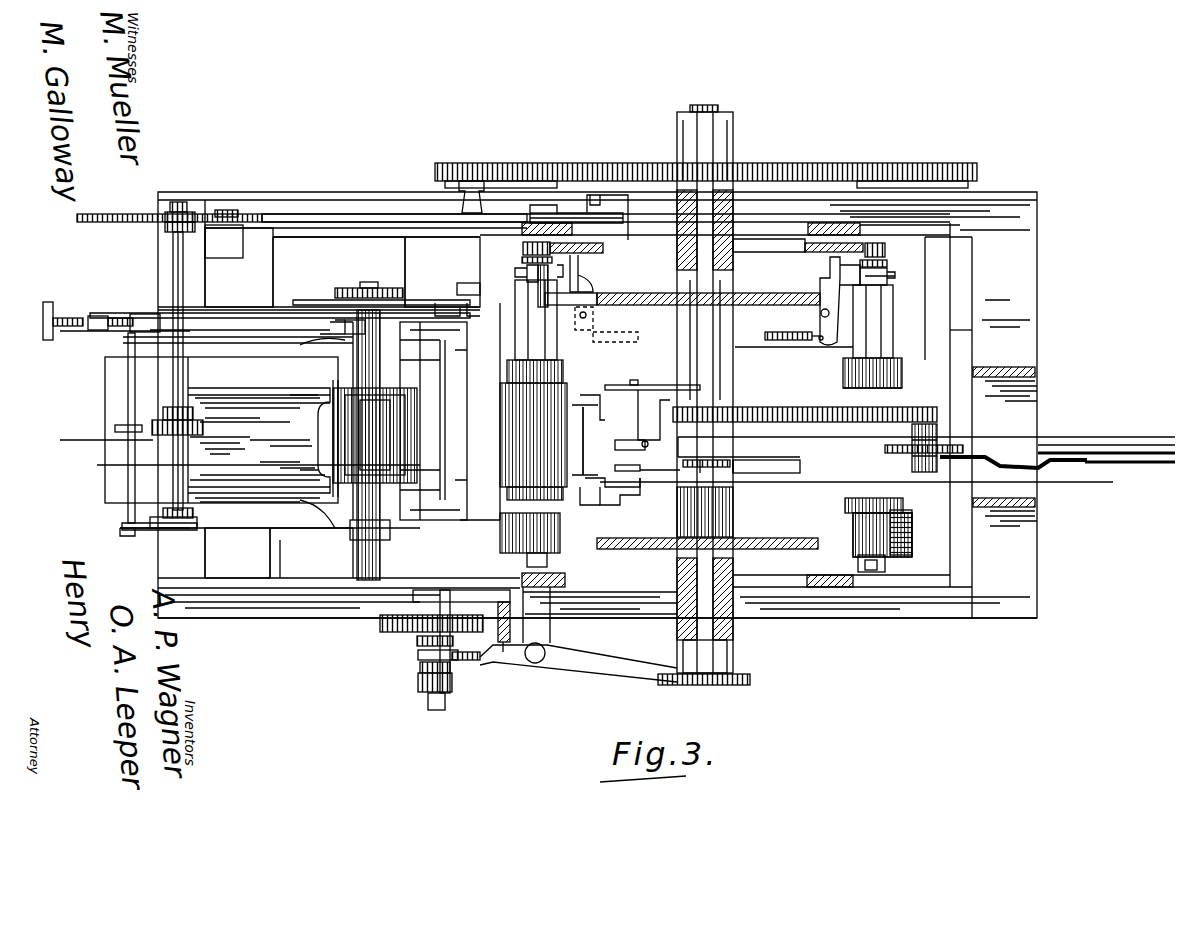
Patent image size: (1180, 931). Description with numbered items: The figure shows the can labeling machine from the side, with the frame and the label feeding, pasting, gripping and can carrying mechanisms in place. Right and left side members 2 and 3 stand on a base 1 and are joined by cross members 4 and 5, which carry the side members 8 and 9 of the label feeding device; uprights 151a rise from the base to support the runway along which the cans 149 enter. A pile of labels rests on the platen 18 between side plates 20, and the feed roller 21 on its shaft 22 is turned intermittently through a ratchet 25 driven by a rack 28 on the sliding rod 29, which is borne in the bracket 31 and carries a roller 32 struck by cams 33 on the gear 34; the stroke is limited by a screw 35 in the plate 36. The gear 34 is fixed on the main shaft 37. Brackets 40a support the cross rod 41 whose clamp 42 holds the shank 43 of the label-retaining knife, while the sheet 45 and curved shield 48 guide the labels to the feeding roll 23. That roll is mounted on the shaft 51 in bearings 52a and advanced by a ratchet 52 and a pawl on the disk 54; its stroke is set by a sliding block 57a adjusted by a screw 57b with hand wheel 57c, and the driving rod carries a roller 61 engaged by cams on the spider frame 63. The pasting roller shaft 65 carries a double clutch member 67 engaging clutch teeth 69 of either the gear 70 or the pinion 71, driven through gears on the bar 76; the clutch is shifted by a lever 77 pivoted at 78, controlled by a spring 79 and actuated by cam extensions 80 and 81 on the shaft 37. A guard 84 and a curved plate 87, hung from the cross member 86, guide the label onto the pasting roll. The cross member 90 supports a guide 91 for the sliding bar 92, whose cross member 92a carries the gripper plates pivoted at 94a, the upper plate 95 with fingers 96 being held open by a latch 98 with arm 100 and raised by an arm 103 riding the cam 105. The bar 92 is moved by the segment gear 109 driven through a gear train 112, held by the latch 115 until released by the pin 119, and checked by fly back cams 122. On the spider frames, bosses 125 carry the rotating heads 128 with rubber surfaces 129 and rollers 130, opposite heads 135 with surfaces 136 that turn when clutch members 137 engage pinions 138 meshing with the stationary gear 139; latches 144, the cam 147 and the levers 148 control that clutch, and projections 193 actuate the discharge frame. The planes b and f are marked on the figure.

The base 1 is at (578, 405).
The right side member 2 is at (160, 588).
The left side member 3 is at (335, 275).
The cross member 4 is at (239, 403).
The cross member 5 is at (442, 272).
The right side member of label feeding device 8 is at (305, 530).
The left side member of label feeding device 9 is at (275, 350).
The horizontal platen 18 is at (260, 431).
The side plates 20 is at (263, 430).
The roller 21 is at (240, 426).
The shaft 22 is at (173, 289).
The feeding roll 23 is at (375, 435).
The ratchet 25 is at (165, 205).
The rack 28 is at (120, 212).
The horizontal sliding rod 29 is at (355, 215).
The bracket 31 is at (220, 240).
The roller 32 is at (490, 185).
The cams 33 is at (525, 185).
The gear 34 is at (600, 170).
The screw 35 is at (618, 200).
The plate 36 is at (575, 205).
The shaft 37 is at (712, 112).
The brackets 40a is at (145, 536).
The cross rod 41 is at (125, 360).
The clamp 42 is at (142, 418).
The shank 43 is at (118, 425).
The sheet 45 is at (330, 528).
The curved shield 48 is at (322, 438).
The shaft 51 is at (345, 322).
The ratchet 52 is at (360, 288).
The bearings 52a is at (367, 545).
The disk 54 is at (350, 290).
The sliding block 57a is at (90, 316).
The screw 57b is at (135, 318).
The hand wheel 57c is at (60, 318).
The roller 61 is at (457, 287).
The rotating spider frame 63 is at (635, 297).
The shaft 65 is at (430, 560).
The double clutch member 67 is at (418, 655).
The clutch teeth 69 is at (417, 640).
The gear 70 is at (380, 626).
The pinion 71 is at (420, 685).
The bar 76 is at (420, 598).
The lever 77 is at (605, 668).
The pivot 78 is at (537, 663).
The spring 79 is at (485, 665).
The cam extension 80 is at (680, 685).
The cam extension 81 is at (710, 685).
The guard 84 is at (410, 435).
The cross member 86 is at (452, 366).
The curved plate 87 is at (412, 450).
The cross member 90 is at (940, 350).
The guide 91 is at (1150, 428).
The sliding bar 92 is at (680, 453).
The cross member 92a is at (620, 440).
The pivot 94a is at (634, 380).
The upper plate 95 is at (599, 441).
The gripping fingers 96 is at (580, 403).
The latch 98 is at (580, 487).
The arm 100 is at (595, 505).
The arm 103 is at (652, 482).
The cam 105 is at (760, 475).
The segment gear 109 is at (940, 440).
The train of gears 112 is at (770, 405).
The latch 115 is at (1020, 465).
The pin 119 is at (885, 448).
The fly back cams 122 is at (654, 385).
The bosses 125 is at (855, 540).
The rotating heads 128 is at (510, 500).
The engaging surfaces 129 is at (845, 502).
The rollers 130 is at (527, 562).
The heads 135 is at (520, 368).
The rubber engaging surfaces 136 is at (855, 385).
The clutch members 137 is at (522, 270).
The pinions 138 is at (523, 250).
The stationary gear 139 is at (808, 255).
The spring controlled latches 144 is at (593, 295).
The cam 147 is at (600, 255).
The actuating levers 148 is at (520, 280).
The cans 149 is at (533, 435).
The uprights 151a is at (1005, 510).
The projections 193 is at (505, 540).
The section line b is at (1105, 502).
The section line f is at (96, 461).